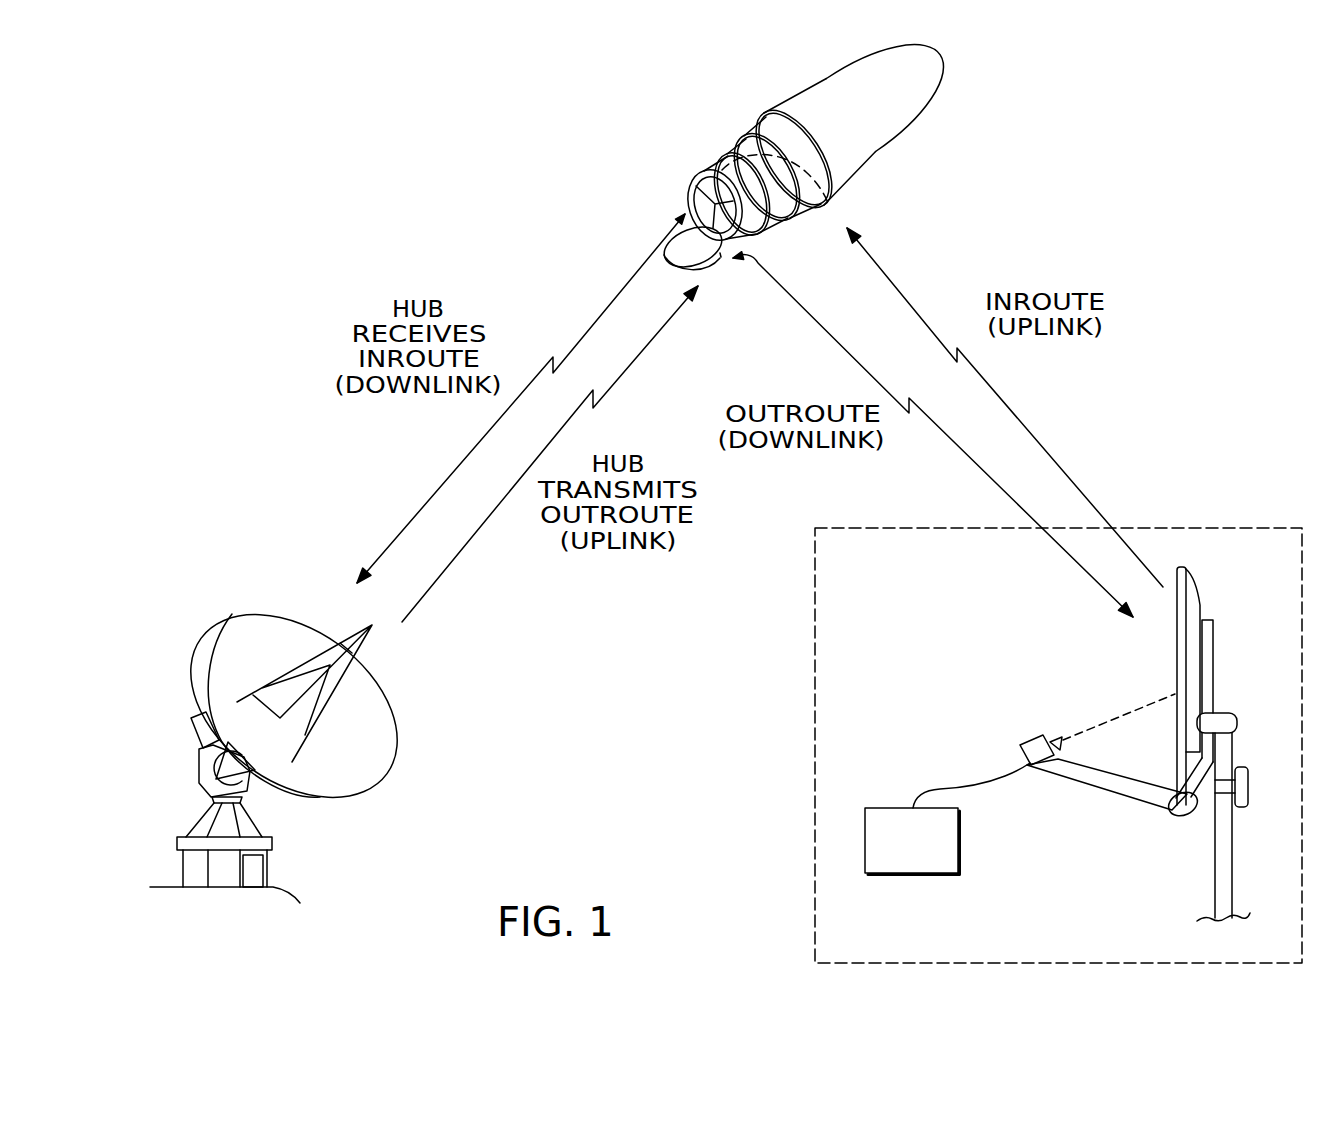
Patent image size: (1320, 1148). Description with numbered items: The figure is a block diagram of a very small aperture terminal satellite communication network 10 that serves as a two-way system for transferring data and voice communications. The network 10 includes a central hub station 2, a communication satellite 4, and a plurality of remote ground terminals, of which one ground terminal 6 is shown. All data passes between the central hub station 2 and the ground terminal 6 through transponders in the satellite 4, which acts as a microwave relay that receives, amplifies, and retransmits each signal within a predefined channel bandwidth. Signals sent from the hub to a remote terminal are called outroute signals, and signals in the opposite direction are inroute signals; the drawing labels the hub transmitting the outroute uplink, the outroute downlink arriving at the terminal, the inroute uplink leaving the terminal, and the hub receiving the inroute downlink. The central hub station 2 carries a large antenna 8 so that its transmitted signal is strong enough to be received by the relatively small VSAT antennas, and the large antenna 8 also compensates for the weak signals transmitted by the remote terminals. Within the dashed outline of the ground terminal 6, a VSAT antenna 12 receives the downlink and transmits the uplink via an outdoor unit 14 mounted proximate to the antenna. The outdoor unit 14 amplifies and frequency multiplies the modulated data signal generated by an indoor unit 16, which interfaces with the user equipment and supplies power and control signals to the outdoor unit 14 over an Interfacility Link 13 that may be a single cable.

The VSAT satellite communication network 10 is at (550, 134).
The communication satellite 4 is at (868, 104).
The large antenna 8 is at (238, 608).
The central hub station 2 is at (198, 780).
The ground terminal 6 is at (1248, 528).
The VSAT antenna 12 is at (1197, 590).
The outdoor unit (ODU) 14 is at (1033, 740).
The Interfacility Link (IFL) 13 is at (973, 783).
The indoor unit (IDU) 16 is at (893, 808).